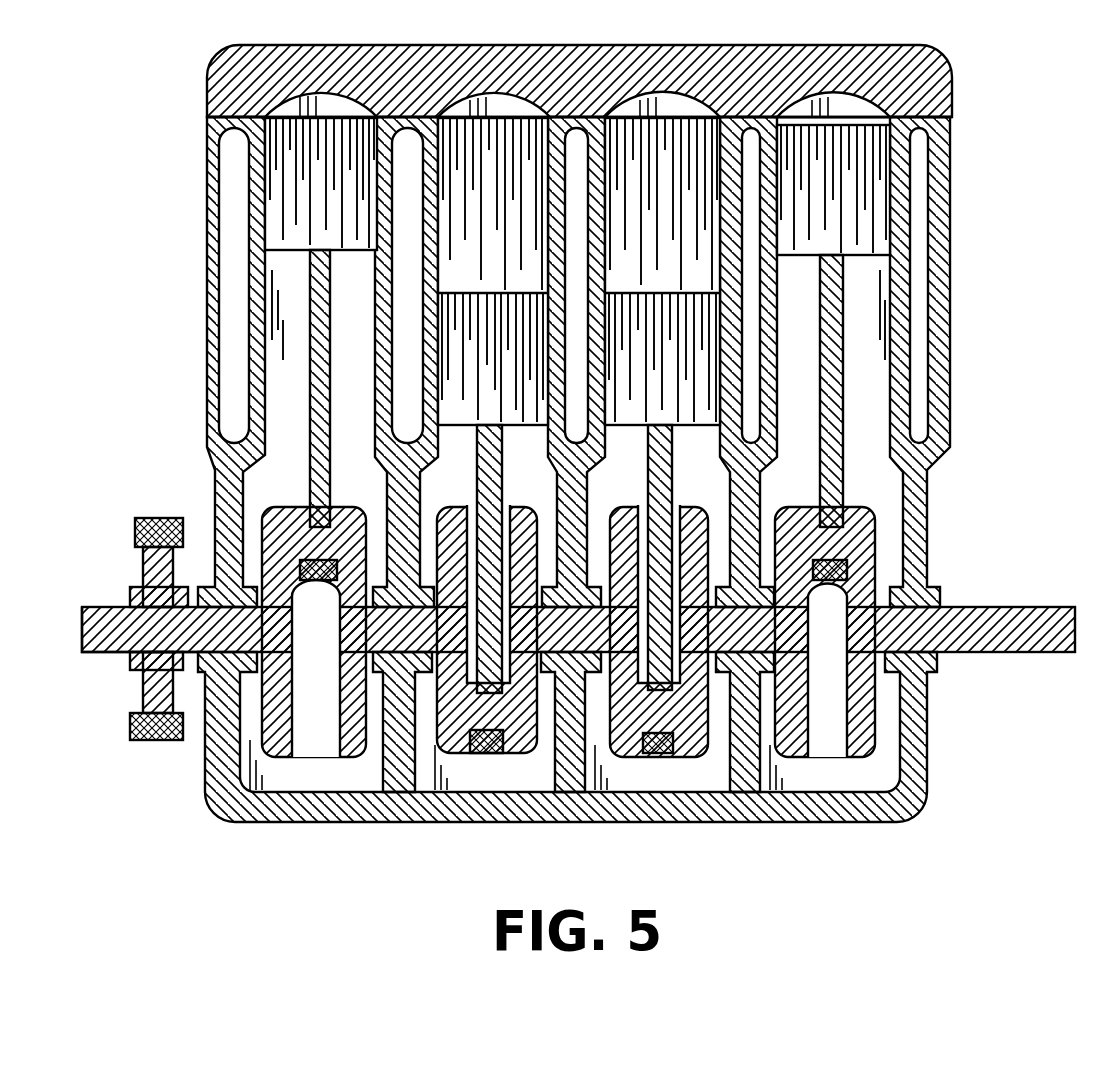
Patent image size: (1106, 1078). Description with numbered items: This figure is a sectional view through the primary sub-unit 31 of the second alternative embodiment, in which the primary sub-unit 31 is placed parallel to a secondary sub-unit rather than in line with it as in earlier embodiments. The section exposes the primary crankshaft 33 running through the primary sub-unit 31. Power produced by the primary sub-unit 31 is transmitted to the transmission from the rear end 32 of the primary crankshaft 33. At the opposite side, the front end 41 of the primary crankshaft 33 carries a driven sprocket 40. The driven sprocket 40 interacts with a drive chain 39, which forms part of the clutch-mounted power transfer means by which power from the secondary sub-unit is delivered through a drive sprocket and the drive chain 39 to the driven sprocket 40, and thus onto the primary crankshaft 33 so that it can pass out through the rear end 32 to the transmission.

The primary sub-unit 31 is at (306, 845).
The rear end 32 is at (1000, 653).
The primary crankshaft 33 is at (812, 676).
The drive chain 39 is at (134, 536).
The driven sprocket 40 is at (140, 573).
The front end 41 is at (110, 653).